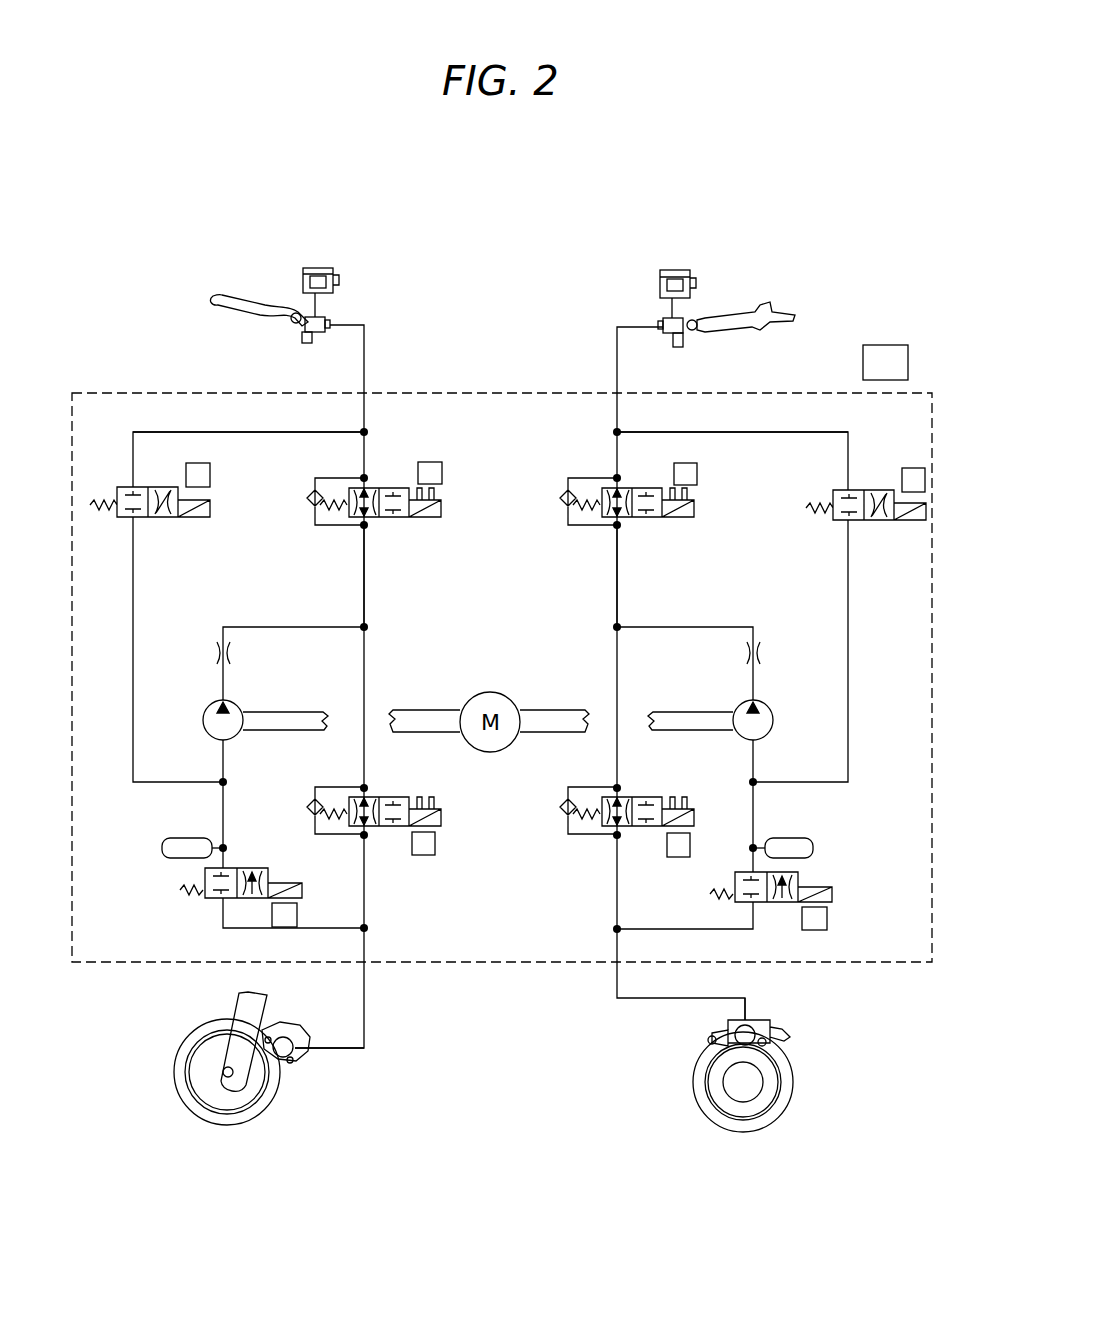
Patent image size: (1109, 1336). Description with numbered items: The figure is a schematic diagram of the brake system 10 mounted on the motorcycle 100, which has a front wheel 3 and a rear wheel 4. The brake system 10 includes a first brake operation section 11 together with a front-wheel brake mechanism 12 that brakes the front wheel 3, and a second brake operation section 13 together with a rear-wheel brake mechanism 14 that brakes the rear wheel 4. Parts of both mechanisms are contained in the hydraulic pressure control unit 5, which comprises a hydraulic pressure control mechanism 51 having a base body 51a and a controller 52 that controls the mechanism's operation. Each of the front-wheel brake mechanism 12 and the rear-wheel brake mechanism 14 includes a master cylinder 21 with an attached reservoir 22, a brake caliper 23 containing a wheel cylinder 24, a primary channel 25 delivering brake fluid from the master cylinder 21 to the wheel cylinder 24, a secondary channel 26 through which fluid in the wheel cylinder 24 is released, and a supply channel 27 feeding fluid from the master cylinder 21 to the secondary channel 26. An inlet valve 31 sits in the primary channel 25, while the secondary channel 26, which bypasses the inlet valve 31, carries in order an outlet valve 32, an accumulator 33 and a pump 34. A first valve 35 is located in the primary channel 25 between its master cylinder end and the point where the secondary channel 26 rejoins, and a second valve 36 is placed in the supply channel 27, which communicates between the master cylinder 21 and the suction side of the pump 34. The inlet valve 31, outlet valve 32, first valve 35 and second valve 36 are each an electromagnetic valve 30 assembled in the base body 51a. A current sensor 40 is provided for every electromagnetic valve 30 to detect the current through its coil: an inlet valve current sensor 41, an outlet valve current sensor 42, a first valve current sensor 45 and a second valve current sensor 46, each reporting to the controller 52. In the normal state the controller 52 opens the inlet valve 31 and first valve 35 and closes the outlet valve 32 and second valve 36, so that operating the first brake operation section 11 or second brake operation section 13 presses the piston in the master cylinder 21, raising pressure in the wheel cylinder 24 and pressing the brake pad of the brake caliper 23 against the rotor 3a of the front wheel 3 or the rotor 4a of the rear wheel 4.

The motorcycle 100 is at (715, 156).
The front wheel 3 is at (232, 1142).
The rotor of the front wheel 3a is at (270, 1100).
The rear wheel 4 is at (747, 1144).
The rotor of the rear wheel 4a is at (700, 1105).
The hydraulic pressure control unit 5 is at (860, 238).
The brake system 10 is at (172, 290).
The first brake operation section 11 is at (235, 300).
The front-wheel brake mechanism 12 is at (400, 213).
The second brake operation section 13 is at (765, 306).
The rear-wheel brake mechanism 14 is at (588, 213).
The master cylinder 21 is at (318, 345).
The reservoir 22 is at (315, 265).
The brake caliper 23 is at (288, 1030).
The wheel cylinder 24 is at (298, 1050).
The primary channel 25 is at (362, 562).
The secondary channel 26 is at (296, 627).
The supply channel 27 is at (272, 432).
The electromagnetic valve 30 is at (512, 719).
The inlet valve 31 is at (400, 797).
The outlet valve 32 is at (260, 868).
The accumulator 33 is at (185, 837).
The pump 34 is at (202, 720).
The first valve 35 is at (429, 518).
The second valve 36 is at (182, 518).
The current sensor 40 is at (562, 674).
The inlet valve current sensor 41 is at (423, 857).
The outlet valve current sensor 42 is at (298, 912).
The first valve current sensor 45 is at (430, 461).
The second valve current sensor 46 is at (212, 478).
The hydraulic pressure control mechanism 51 is at (831, 335).
The base body 51a is at (822, 395).
The controller 52 is at (891, 338).